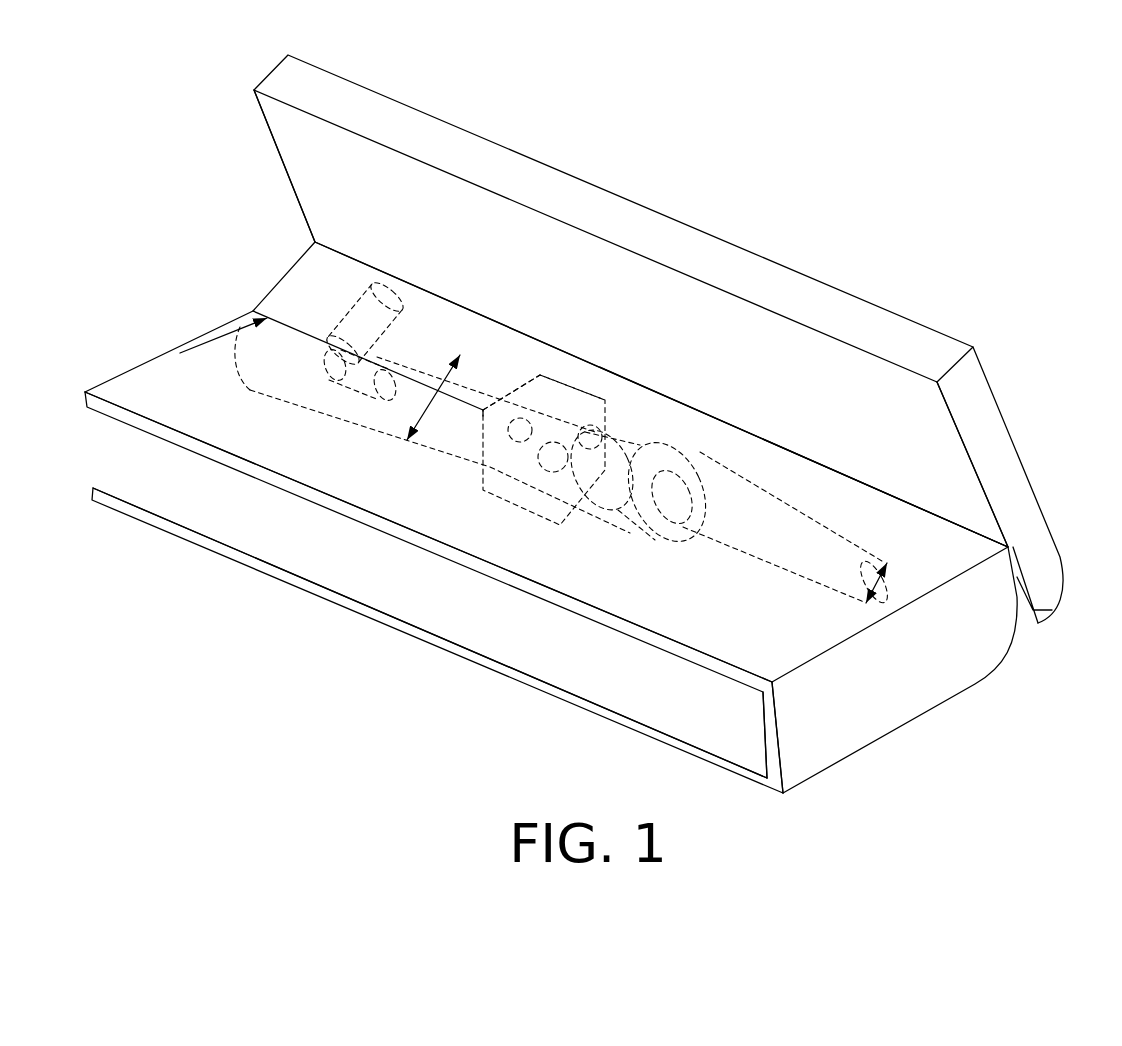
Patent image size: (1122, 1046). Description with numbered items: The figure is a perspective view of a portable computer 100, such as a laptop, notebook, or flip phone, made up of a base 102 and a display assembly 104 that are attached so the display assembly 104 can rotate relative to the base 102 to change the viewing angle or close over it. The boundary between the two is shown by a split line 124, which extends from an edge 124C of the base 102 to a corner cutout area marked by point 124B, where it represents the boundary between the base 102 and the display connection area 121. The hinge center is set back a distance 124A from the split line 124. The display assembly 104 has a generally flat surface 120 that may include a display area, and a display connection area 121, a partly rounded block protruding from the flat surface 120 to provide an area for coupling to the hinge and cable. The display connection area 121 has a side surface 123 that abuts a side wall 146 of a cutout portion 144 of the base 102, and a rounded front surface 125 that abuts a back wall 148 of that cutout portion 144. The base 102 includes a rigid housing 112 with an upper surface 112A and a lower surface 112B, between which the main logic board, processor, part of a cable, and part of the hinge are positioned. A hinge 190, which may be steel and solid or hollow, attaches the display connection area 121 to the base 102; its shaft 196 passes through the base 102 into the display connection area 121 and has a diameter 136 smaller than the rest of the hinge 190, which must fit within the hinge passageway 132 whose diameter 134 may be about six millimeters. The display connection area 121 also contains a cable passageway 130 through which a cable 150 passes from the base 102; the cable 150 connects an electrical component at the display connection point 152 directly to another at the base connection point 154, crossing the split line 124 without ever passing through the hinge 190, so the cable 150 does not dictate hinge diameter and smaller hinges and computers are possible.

The portable computer 100 is at (693, 79).
The base 102 is at (858, 725).
The display assembly 104 is at (880, 313).
The housing 112 is at (812, 777).
The upper surface 112A is at (543, 580).
The lower surface 112B is at (518, 678).
The generally flat surface 120 is at (842, 370).
The display connection area 121 is at (490, 345).
The side surface 123 is at (527, 383).
The split line 124 is at (912, 510).
The distance 124A is at (767, 502).
The point 124B is at (242, 308).
The edge 124C is at (1052, 610).
The front surface 125 is at (420, 307).
The cable passageway 130 is at (393, 398).
The hinge passageway 132 is at (445, 350).
The diameter 134 is at (483, 410).
The diameter 136 is at (883, 577).
The cutout portion 144 is at (212, 348).
The side wall 146 is at (560, 392).
The back wall 148 is at (312, 340).
The cable 150 is at (468, 418).
The display connection point 152 is at (383, 288).
The base connection point 154 is at (507, 497).
The hinge 190 is at (658, 440).
The shaft 196 is at (745, 557).